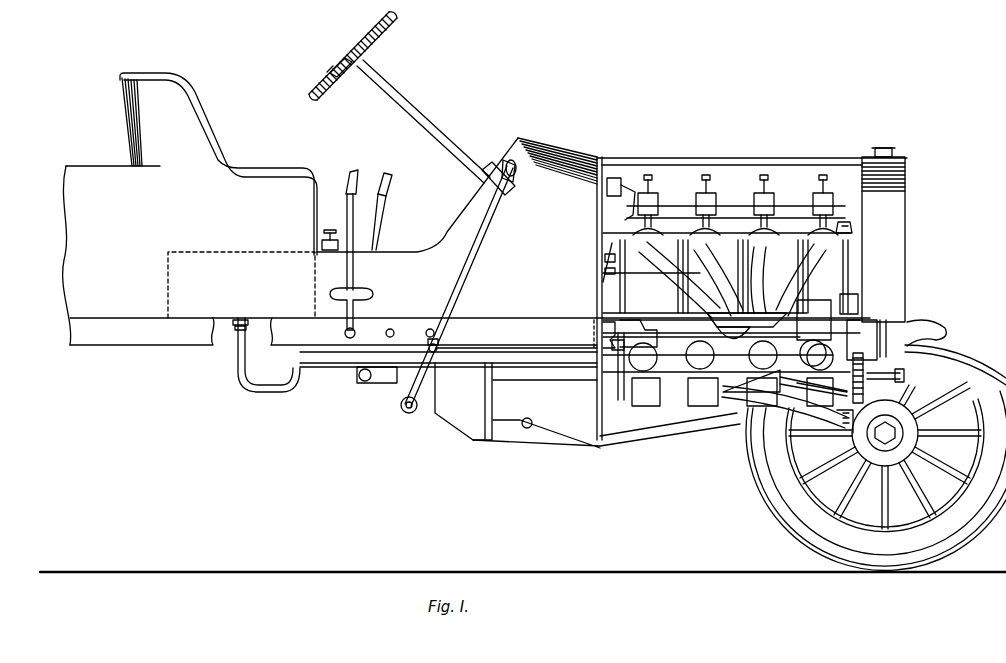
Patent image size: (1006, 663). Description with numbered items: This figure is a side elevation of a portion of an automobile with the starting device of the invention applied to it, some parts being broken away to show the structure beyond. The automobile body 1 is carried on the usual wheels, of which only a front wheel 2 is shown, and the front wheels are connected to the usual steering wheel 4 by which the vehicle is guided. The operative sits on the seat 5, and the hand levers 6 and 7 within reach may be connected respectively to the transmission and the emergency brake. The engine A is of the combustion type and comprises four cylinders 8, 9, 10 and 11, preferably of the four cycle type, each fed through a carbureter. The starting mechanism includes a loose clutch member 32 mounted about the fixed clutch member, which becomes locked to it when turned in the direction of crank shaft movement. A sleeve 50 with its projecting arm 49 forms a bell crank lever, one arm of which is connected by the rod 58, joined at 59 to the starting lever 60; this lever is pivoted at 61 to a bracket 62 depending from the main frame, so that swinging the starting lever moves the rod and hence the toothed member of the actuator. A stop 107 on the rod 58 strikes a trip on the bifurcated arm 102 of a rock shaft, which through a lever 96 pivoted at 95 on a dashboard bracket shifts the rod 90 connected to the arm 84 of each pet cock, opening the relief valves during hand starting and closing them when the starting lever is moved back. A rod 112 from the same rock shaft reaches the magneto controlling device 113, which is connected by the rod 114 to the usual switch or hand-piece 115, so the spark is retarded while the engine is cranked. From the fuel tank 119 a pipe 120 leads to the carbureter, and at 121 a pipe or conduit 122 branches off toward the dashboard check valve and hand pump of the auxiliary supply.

The automobile body 1 is at (88, 292).
The front wheel 2 is at (793, 518).
The steering wheel 4 is at (378, 48).
The seat 5 is at (228, 168).
The hand lever 6 is at (349, 173).
The hand lever 7 is at (380, 207).
The cylinder 8 is at (633, 220).
The cylinder 9 is at (690, 243).
The cylinder 10 is at (743, 243).
The cylinder 11 is at (807, 243).
The loose clutch member 32 is at (905, 379).
The arm 49 is at (833, 388).
The sleeve 50 is at (805, 374).
The rod 58 is at (500, 350).
The connection 59 is at (437, 344).
The starting lever 60 is at (476, 242).
The pivot 61 is at (407, 415).
The bracket 62 is at (403, 383).
The arm of the pet cock 84 is at (848, 230).
The rod 90 is at (847, 221).
The pivot 95 is at (606, 272).
The lever 96 is at (608, 260).
The bifurcated arm 102 is at (598, 322).
The stop 107 is at (622, 390).
The rod 112 is at (822, 336).
The magneto controlling device 113 is at (800, 320).
The rod 114 is at (790, 298).
The switch or hand-piece 115 is at (336, 65).
The fuel tank 119 is at (197, 252).
The pipe 120 is at (264, 393).
The connection 121 is at (624, 402).
The pipe or conduit 122 is at (575, 350).
The engine A is at (752, 277).